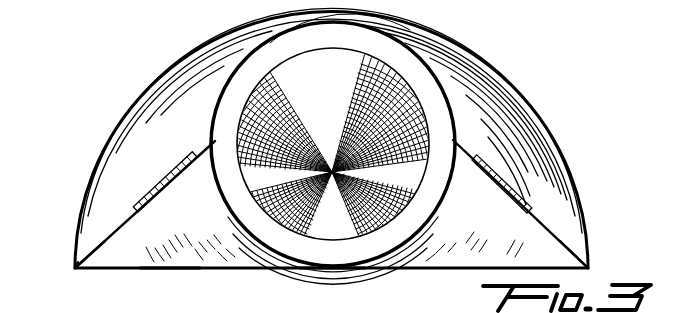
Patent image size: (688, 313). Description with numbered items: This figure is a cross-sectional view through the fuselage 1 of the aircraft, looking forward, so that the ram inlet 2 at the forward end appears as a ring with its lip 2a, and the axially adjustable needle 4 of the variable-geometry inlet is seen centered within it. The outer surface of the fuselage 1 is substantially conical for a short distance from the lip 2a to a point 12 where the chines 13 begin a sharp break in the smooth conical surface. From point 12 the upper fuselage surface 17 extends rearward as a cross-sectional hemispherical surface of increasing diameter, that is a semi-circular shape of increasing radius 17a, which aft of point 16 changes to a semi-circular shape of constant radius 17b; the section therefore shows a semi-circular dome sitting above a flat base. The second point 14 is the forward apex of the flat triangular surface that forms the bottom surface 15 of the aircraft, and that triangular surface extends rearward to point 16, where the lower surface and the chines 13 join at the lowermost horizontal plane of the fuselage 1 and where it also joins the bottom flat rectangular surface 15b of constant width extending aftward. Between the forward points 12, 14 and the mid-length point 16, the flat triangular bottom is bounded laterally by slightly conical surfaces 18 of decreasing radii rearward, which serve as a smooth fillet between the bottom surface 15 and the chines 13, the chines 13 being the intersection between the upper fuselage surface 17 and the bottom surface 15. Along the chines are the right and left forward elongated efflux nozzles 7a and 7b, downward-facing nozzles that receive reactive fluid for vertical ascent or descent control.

The fuselage 1 is at (158, 62).
The ram inlet 2 is at (270, 44).
The lip 2a is at (408, 45).
The needle 4 is at (336, 112).
The right forward elongated efflux nozzle 7a is at (163, 200).
The left forward elongated efflux nozzle 7b is at (508, 200).
The point 12 is at (200, 148).
The chines 13 is at (97, 255).
The second point 14 is at (332, 272).
The bottom surface 15 is at (398, 274).
The bottom flat rectangular surface 15b is at (170, 273).
The point 16 is at (73, 267).
The upper fuselage surface 17 is at (200, 48).
The semi-circular shape of increasing radius 17a is at (493, 92).
The semi-circular shape of constant radius 17b is at (562, 157).
The slightly conical surfaces 18 is at (145, 258).